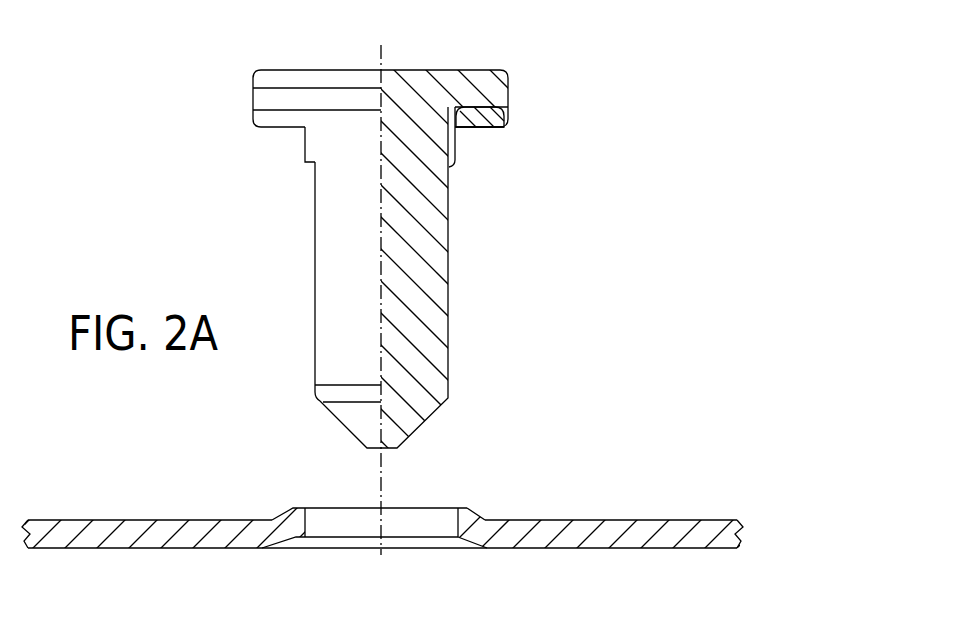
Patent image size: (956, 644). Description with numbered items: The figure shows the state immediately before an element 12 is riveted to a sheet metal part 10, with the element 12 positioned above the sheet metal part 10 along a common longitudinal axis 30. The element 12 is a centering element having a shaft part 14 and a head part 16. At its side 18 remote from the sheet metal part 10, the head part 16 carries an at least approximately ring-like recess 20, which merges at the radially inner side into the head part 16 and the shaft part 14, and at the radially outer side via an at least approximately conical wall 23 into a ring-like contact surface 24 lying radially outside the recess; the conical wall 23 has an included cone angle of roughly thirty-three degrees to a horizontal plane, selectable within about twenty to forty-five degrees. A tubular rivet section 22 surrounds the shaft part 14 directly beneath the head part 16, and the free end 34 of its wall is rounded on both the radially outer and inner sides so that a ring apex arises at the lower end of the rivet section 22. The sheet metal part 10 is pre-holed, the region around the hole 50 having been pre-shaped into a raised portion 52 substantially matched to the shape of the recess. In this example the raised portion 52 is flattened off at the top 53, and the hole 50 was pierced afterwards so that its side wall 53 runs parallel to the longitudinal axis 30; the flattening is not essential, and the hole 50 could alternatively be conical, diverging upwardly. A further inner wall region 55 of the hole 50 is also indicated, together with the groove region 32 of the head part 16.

The sheet metal part 10 is at (640, 518).
The element 12 is at (452, 272).
The shaft part 14 is at (440, 325).
The head part 16 is at (440, 70).
The side remote from the sheet metal part 18 is at (461, 130).
The ring recess 20 is at (474, 128).
The tubular rivet section 22 is at (456, 160).
The conical wall 23 is at (496, 118).
The contact surface 24 is at (267, 128).
The longitudinal axis 30 is at (383, 463).
The annular groove 32 is at (480, 112).
The free end of the wall of the tubular rivet section 34 is at (335, 167).
The hole 50 is at (320, 527).
The raised portion 52 is at (286, 511).
The flattened top / side wall of the hole 53 is at (295, 508).
The inner wall of collar 55 is at (450, 527).